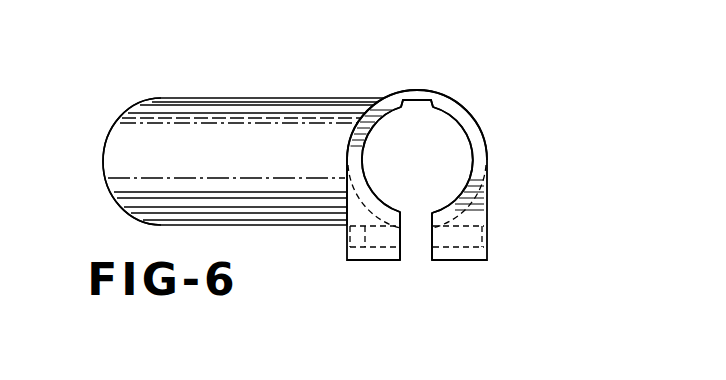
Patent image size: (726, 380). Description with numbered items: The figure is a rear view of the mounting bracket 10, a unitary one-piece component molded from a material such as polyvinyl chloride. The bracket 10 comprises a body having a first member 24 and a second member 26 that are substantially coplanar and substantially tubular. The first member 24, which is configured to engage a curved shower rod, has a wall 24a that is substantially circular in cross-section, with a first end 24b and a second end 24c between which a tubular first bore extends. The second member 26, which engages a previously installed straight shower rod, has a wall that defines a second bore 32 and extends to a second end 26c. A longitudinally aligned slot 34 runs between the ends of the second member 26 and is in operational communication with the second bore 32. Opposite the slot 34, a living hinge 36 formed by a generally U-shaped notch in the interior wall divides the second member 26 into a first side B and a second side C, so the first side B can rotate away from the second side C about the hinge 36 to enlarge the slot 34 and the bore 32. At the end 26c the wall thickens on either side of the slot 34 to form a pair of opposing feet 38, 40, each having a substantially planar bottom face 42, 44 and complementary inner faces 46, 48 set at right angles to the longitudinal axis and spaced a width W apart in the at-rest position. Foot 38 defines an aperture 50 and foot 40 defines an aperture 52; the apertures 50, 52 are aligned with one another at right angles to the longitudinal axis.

The mounting bracket 10 is at (214, 81).
The first member 24 is at (251, 90).
The wall 24a is at (286, 108).
The first end 24b is at (103, 157).
The second end 24c is at (364, 98).
The second member 26 is at (489, 124).
The second end 26c is at (461, 113).
The second bore 32 is at (450, 140).
The slot 34 is at (405, 235).
The living hinge 36 is at (416, 92).
The foot 38 is at (453, 272).
The foot 40 is at (379, 272).
The bottom face 42 is at (476, 262).
The bottom face 44 is at (358, 262).
The inner face 46 is at (430, 258).
The inner face 48 is at (403, 258).
The aperture 50 is at (486, 240).
The aperture 52 is at (348, 237).
The first side B is at (495, 153).
The second side C is at (338, 151).